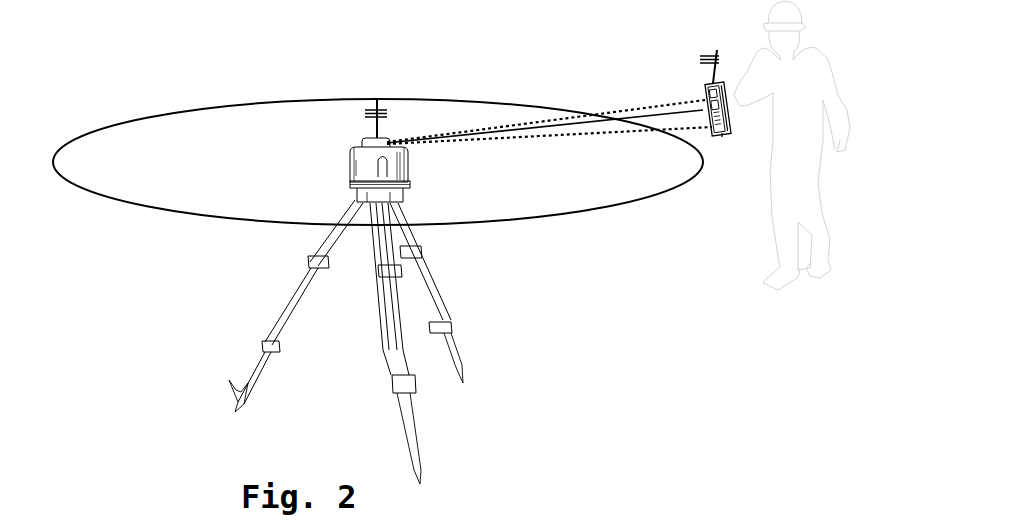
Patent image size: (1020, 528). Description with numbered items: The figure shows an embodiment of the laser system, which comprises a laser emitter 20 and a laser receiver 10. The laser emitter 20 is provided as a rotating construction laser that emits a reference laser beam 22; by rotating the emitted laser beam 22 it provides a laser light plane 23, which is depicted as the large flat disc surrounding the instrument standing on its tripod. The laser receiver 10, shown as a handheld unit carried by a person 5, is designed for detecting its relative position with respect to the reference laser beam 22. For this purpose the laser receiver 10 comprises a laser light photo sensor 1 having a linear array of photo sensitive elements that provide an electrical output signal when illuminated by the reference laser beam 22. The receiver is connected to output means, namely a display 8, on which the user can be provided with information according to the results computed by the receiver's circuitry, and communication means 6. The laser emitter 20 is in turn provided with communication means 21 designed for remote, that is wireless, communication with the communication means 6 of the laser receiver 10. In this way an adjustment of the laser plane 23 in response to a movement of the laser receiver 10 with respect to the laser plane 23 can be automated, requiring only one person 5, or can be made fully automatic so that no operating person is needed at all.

The laser light photo sensor 1 is at (723, 112).
The person 5 is at (830, 63).
The communication means 6 is at (717, 50).
The display 8 is at (706, 99).
The laser receiver 10 is at (523, 46).
The laser emitter 20 is at (350, 162).
The communication means 21 is at (377, 99).
The reference laser beam 22 is at (493, 135).
The laser light plane 23 is at (577, 215).